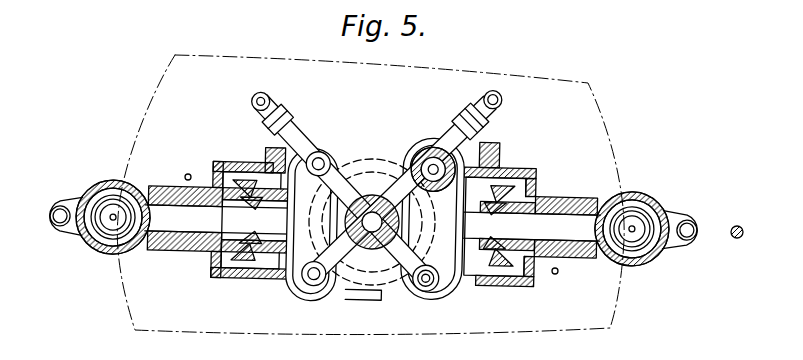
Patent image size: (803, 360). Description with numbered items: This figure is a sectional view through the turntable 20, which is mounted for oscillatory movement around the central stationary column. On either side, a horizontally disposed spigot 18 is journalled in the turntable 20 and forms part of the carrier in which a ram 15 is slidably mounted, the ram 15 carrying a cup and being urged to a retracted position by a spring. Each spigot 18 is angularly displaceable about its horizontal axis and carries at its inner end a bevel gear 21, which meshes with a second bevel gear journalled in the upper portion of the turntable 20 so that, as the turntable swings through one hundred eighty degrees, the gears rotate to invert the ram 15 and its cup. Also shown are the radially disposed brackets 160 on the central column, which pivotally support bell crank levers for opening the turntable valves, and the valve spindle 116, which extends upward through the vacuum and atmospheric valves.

The ram 15 is at (122, 200).
The spigot 18 is at (178, 238).
The turntable 20 is at (250, 273).
The bevel gear 21 is at (233, 183).
The bracket 160 is at (290, 147).
The valve spindle 116 is at (738, 226).